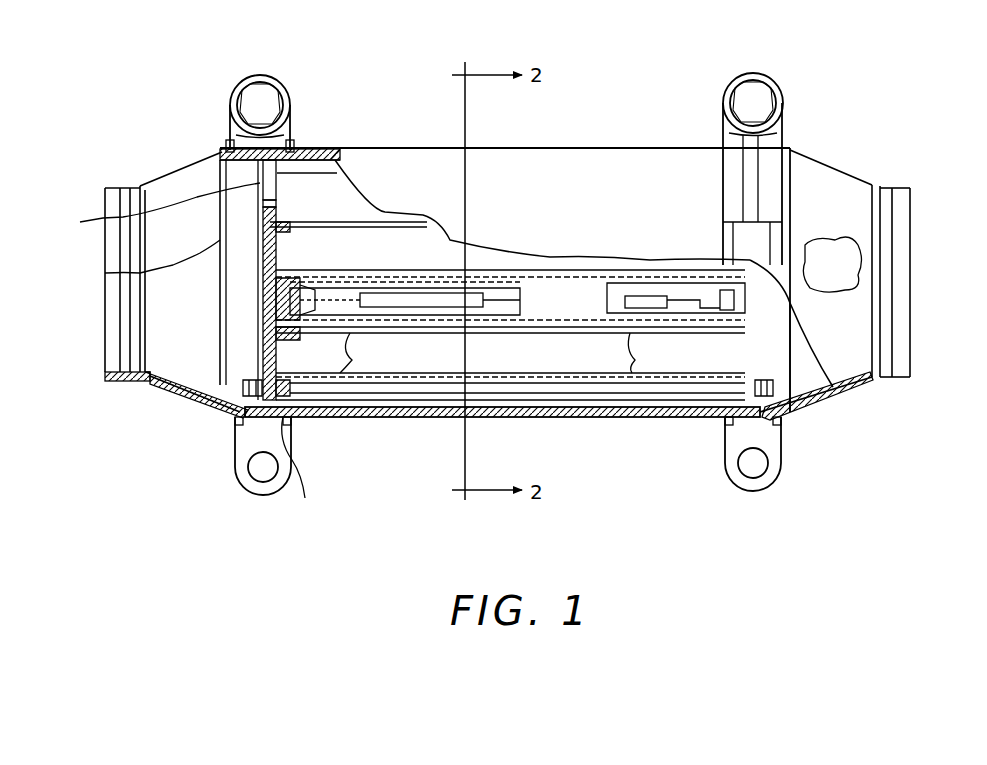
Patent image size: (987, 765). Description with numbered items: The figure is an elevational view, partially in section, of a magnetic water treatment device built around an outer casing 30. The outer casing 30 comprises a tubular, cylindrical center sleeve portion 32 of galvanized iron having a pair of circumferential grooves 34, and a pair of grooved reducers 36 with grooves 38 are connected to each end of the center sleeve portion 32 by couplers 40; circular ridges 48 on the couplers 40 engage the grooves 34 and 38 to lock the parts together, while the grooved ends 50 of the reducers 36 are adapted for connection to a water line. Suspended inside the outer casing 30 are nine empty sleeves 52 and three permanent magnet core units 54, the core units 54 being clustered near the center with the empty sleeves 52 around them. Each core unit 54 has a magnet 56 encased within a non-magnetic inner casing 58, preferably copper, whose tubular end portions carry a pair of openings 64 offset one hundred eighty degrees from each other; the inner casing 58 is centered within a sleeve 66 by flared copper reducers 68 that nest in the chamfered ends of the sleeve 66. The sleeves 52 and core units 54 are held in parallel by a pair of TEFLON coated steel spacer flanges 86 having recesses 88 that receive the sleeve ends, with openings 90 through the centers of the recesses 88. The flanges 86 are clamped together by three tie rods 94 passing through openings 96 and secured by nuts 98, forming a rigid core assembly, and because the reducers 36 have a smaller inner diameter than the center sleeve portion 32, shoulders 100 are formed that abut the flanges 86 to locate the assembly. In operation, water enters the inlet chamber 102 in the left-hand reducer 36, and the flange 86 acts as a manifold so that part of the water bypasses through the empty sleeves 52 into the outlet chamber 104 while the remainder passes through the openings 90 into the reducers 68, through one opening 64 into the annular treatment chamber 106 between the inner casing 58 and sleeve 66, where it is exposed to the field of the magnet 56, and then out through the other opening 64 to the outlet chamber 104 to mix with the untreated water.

The outer casing 30 is at (549, 146).
The center sleeve portion 32 is at (648, 160).
The circumferential grooves 34 is at (283, 150).
The grooved reducers 36 is at (196, 176).
The grooves 38 is at (233, 418).
The couplers 40 is at (258, 76).
The circular ridges 48 is at (227, 147).
The ends 50 is at (109, 186).
The empty sleeves 52 is at (315, 183).
The permanent magnet core units 54 is at (294, 335).
The magnet 56 is at (387, 295).
The inner casing 58 is at (498, 295).
The openings 64 is at (355, 293).
The sleeve 66 is at (413, 323).
The flared copper reducers 68 is at (292, 272).
The spacer flanges 86 is at (790, 473).
The recesses 88 is at (277, 228).
The openings 90 is at (265, 262).
The tie rods 94 is at (598, 400).
The openings 96 is at (293, 390).
The nuts 98 is at (748, 378).
The shoulders 100 is at (240, 420).
The inlet chamber 102 is at (206, 301).
The outlet chamber 104 is at (848, 276).
The annular treatment chamber 106 is at (427, 285).